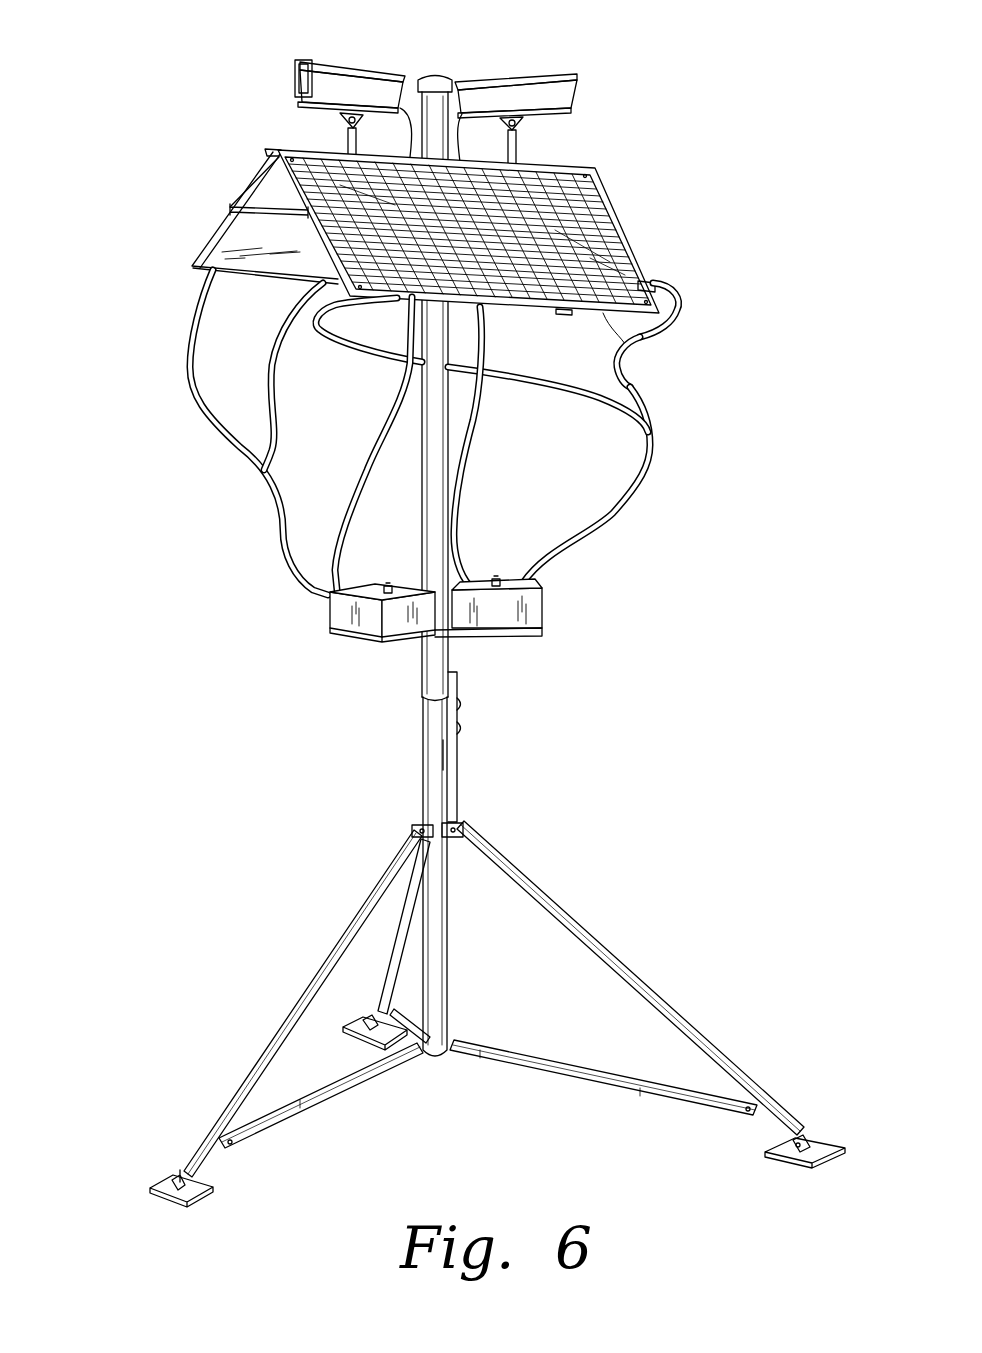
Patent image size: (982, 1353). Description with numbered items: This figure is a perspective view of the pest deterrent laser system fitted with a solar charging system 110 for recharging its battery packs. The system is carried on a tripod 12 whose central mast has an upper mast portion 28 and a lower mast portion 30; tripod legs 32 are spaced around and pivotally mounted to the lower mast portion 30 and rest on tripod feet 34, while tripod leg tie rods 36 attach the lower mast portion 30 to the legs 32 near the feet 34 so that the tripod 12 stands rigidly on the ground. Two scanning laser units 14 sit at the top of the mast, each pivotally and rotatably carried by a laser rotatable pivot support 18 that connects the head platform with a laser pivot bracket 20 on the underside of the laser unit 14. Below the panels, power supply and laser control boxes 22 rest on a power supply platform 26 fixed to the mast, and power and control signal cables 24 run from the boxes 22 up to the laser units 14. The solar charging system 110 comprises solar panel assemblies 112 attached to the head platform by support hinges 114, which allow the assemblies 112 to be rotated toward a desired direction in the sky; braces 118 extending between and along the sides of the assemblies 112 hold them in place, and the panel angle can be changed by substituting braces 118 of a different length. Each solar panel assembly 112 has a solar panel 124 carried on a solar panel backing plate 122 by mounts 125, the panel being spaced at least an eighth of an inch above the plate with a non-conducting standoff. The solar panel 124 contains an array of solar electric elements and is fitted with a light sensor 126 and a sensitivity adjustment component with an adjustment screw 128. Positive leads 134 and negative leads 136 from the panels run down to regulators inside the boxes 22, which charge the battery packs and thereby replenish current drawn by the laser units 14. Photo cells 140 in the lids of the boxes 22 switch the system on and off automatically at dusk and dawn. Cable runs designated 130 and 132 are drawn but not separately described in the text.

The tripod 12 is at (382, 698).
The scanning laser units 14 is at (248, 76).
The laser rotatable pivot supports 18 is at (520, 140).
The laser pivot brackets 20 is at (340, 115).
The power supply and laser control boxes 22 is at (327, 622).
The power and control signal cables 24 is at (372, 430).
The power supply platform 26 is at (483, 640).
The upper mast portion 28 is at (432, 448).
The lower mast portion 30 is at (430, 785).
The tripod legs 32 is at (378, 965).
The tripod feet 34 is at (357, 1033).
The tripod leg tie rods 36 is at (367, 1068).
The solar charging system 110 is at (742, 72).
The solar panel assemblies 112 is at (165, 186).
The support hinges 114 is at (553, 162).
The braces 118 is at (250, 218).
The solar panel backing plate 122 is at (257, 275).
The solar panel 124 is at (605, 215).
The mounts 125 is at (318, 322).
The light sensor 126 is at (647, 275).
The adjustment screw 128 is at (563, 311).
The cable bend 130 is at (637, 352).
The panel cable 132 is at (648, 470).
The positive leads 134 is at (683, 315).
The negative leads 136 is at (557, 380).
The photo cells 140 is at (388, 584).